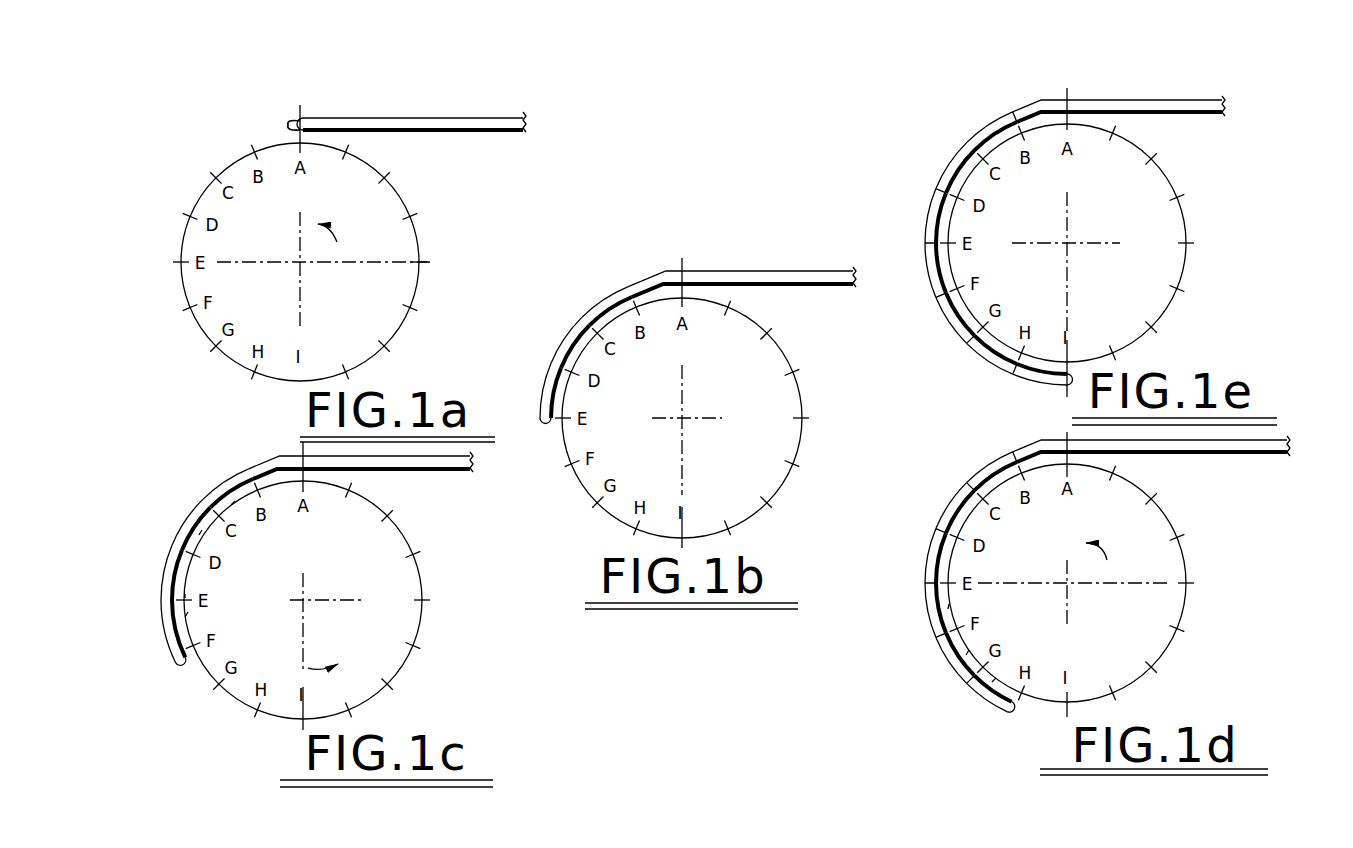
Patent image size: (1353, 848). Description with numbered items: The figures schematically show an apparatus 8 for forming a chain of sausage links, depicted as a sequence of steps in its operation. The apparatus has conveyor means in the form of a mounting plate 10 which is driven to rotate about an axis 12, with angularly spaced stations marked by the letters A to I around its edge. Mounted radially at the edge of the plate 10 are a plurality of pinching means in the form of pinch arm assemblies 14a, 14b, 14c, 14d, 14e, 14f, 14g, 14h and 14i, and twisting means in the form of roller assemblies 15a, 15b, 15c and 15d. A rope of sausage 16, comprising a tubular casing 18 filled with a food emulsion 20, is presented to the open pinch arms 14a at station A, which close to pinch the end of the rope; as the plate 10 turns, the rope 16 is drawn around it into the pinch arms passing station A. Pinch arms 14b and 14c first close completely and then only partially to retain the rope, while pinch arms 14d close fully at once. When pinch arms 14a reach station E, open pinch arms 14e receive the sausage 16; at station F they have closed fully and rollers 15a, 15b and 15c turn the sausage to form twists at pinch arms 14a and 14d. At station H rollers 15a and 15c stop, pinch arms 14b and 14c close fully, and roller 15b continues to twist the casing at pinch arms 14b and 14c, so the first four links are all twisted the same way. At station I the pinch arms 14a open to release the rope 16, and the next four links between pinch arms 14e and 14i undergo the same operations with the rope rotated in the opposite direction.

In FIG. 1A, the apparatus 8 is at (369, 226).
In FIG. 1A, the mounting plate 10 is at (377, 287).
In FIG. 1B, the mounting plate 10 is at (767, 398).
In FIG. 1C, the mounting plate 10 is at (387, 585).
In FIG. 1E, the mounting plate 10 is at (1148, 230).
In FIG. 1D, the mounting plate 10 is at (1157, 560).
In FIG. 1A, the axis 12 is at (300, 262).
In FIG. 1B, the axis 12 is at (682, 418).
In FIG. 1C, the axis 12 is at (303, 600).
In FIG. 1E, the axis 12 is at (1067, 243).
In FIG. 1D, the axis 12 is at (1067, 583).
In FIG. 1A, the pinch arms 14a is at (296, 117).
In FIG. 1B, the pinch arms 14a is at (534, 420).
In FIG. 1C, the pinch arms 14a is at (171, 660).
In FIG. 1E, the pinch arms 14a is at (1066, 388).
In FIG. 1D, the pinch arms 14a is at (1018, 712).
In FIG. 1B, the pinch arms 14b is at (548, 364).
In FIG. 1C, the pinch arms 14b is at (192, 603).
In FIG. 1E, the pinch arms 14b is at (1003, 378).
In FIG. 1D, the pinch arms 14b is at (970, 688).
In FIG. 1B, the pinch arms 14c is at (576, 316).
In FIG. 1C, the pinch arms 14c is at (173, 522).
In FIG. 1E, the pinch arms 14c is at (962, 347).
In FIG. 1D, the pinch arms 14c is at (938, 641).
In FIG. 1B, the pinch arms 14d is at (628, 288).
In FIG. 1C, the pinch arms 14d is at (203, 500).
In FIG. 1E, the pinch arms 14d is at (934, 302).
In FIG. 1D, the pinch arms 14d is at (927, 587).
In FIG. 1B, the pinch arms 14e is at (676, 268).
In FIG. 1C, the pinch arms 14e is at (250, 468).
In FIG. 1E, the pinch arms 14e is at (925, 247).
In FIG. 1D, the pinch arms 14e is at (939, 533).
In FIG. 1C, the pinch arm assembly 14f is at (300, 452).
In FIG. 1E, the pinch arm assembly 14f is at (931, 192).
In FIG. 1D, the pinch arm assembly 14f is at (969, 482).
In FIG. 1E, the pinch arm assembly 14g is at (962, 143).
In FIG. 1D, the pinch arm assembly 14g is at (1011, 454).
In FIG. 1E, the pinch arm assembly 14h is at (1006, 113).
In FIG. 1D, the pinch arm assembly 14h is at (1065, 441).
In FIG. 1E, the pinch arm 14i is at (1060, 94).
In FIG. 1C, the roller 15a is at (186, 619).
In FIG. 1D, the roller 15a is at (993, 681).
In FIG. 1C, the roller 15b is at (186, 596).
In FIG. 1D, the roller 15b is at (967, 653).
In FIG. 1C, the roller 15c is at (200, 534).
In FIG. 1D, the roller 15c is at (948, 607).
In FIG. 1C, the roller assembly 15d is at (232, 504).
In FIG. 1A, the rope of sausage 16 is at (397, 140).
In FIG. 1B, the rope of sausage 16 is at (668, 309).
In FIG. 1C, the rope of sausage 16 is at (300, 531).
In FIG. 1E, the rope of sausage 16 is at (1043, 213).
In FIG. 1D, the rope of sausage 16 is at (1066, 588).
In FIG. 1A, the tubular casing 18 is at (462, 130).
In FIG. 1A, the food emulsion 20 is at (410, 132).